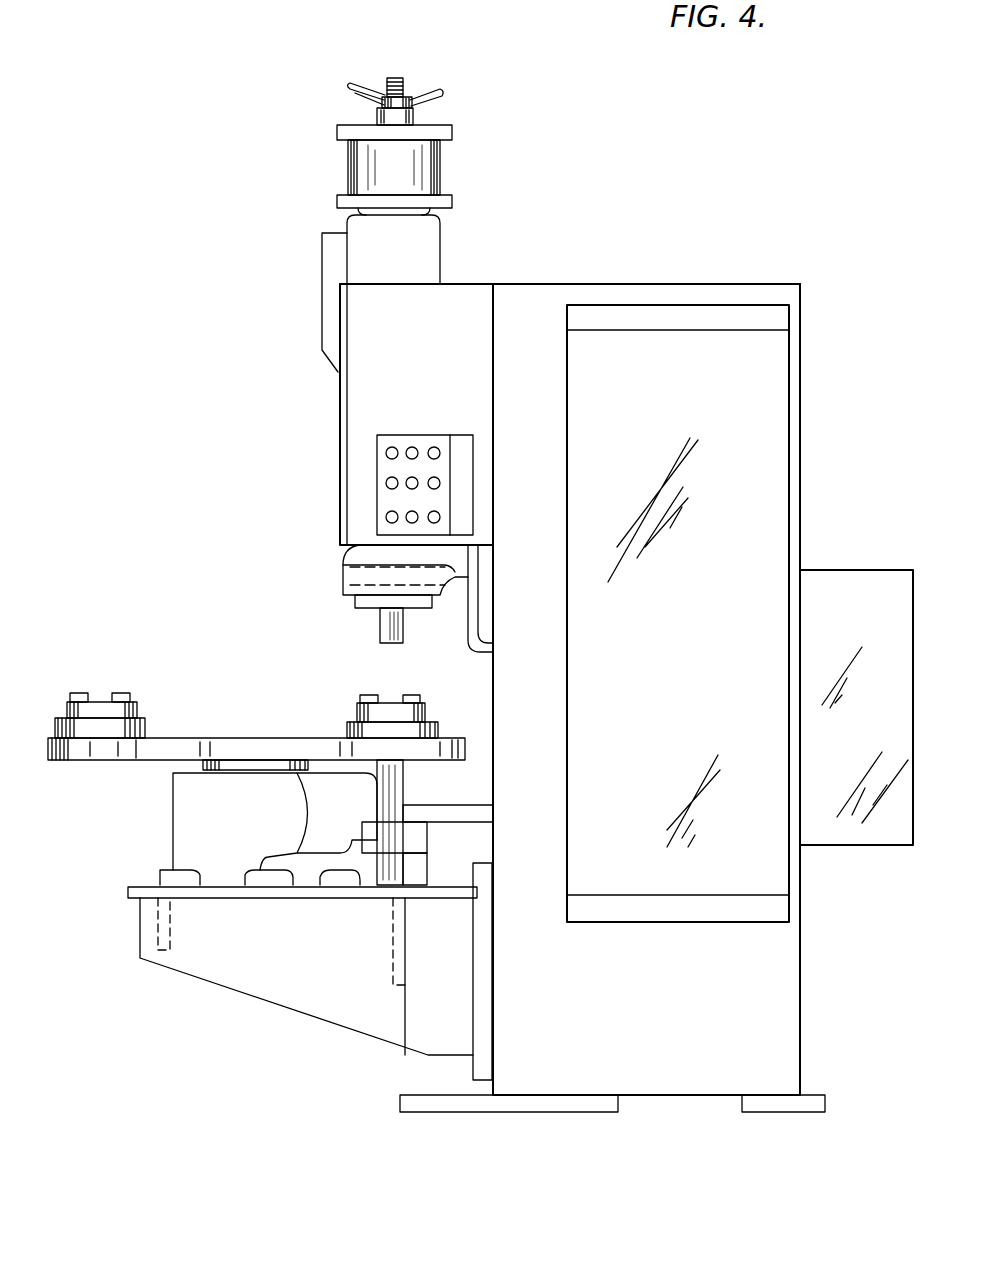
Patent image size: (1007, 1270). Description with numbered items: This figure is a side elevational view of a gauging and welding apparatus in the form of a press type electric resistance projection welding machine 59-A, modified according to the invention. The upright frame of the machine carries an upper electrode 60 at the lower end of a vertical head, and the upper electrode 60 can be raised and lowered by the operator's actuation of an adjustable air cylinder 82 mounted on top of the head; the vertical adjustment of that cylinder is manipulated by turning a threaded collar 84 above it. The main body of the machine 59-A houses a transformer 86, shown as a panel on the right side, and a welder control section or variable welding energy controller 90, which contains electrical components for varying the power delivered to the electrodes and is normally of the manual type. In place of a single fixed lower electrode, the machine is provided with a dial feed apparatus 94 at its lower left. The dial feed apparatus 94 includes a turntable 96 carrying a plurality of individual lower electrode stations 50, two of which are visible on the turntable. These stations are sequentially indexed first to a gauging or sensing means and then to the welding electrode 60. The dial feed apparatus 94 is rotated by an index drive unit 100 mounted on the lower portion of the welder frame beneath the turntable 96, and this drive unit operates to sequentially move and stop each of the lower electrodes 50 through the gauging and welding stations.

The welding machine 59-A is at (612, 212).
The variable welding energy controller 90 is at (715, 320).
The transformer 86 is at (848, 580).
The adjustable air cylinder 82 is at (362, 160).
The threaded collar 84 is at (363, 87).
The upper electrode 60 is at (385, 623).
The turntable 96 is at (155, 752).
The lower electrode 50 is at (84, 693).
The index drive unit 100 is at (323, 830).
The dial feed apparatus 94 is at (193, 975).